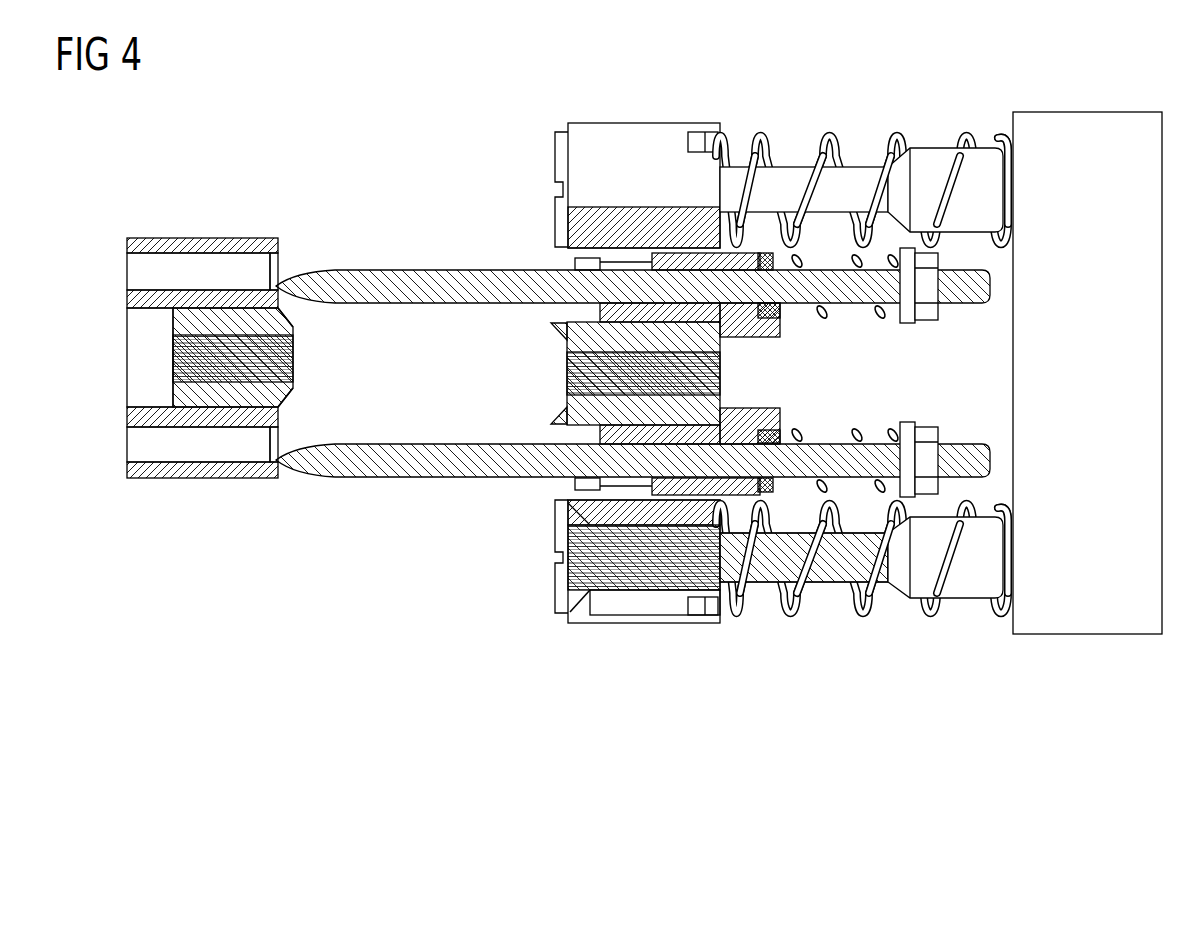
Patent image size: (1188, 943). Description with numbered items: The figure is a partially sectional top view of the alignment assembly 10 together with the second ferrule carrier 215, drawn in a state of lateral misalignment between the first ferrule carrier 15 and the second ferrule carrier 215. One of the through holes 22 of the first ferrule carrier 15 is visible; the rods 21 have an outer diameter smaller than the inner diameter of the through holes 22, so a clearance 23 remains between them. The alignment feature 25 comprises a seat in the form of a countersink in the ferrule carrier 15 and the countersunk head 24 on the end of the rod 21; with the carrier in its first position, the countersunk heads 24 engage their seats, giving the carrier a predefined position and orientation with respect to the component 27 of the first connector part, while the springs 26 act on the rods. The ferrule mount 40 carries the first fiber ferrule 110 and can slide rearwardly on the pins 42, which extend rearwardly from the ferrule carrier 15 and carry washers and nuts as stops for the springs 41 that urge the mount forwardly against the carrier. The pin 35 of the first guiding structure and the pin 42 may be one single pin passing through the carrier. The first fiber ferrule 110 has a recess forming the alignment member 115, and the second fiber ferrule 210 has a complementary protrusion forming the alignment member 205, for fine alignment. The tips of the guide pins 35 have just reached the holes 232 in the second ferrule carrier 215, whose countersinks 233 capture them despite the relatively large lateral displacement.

The alignment assembly 10 is at (867, 660).
The first ferrule carrier 15 is at (645, 121).
The rod 21 is at (790, 176).
The through hole 22 is at (636, 592).
The clearance 23 is at (672, 592).
The countersunk head 24 is at (563, 527).
The alignment feature 25 is at (571, 623).
The spring 26 is at (898, 136).
The component 27 is at (1090, 636).
The guide pin 35 is at (450, 270).
The ferrule mount 40 is at (762, 410).
The spring 41 is at (853, 432).
The pin 42 is at (820, 444).
The first fiber ferrule 110 is at (550, 332).
The alignment member 115 is at (549, 415).
The alignment member 205 is at (292, 392).
The second fiber ferrule 210 is at (292, 327).
The second ferrule carrier 215 is at (197, 238).
The hole 232 is at (127, 270).
The countersink 233 is at (280, 262).